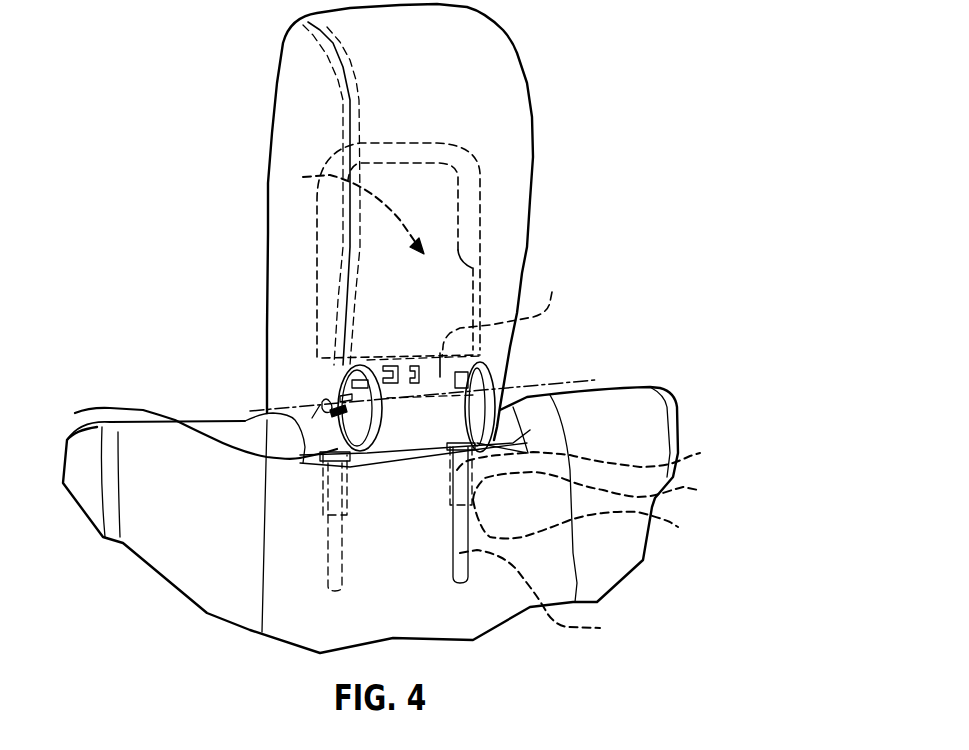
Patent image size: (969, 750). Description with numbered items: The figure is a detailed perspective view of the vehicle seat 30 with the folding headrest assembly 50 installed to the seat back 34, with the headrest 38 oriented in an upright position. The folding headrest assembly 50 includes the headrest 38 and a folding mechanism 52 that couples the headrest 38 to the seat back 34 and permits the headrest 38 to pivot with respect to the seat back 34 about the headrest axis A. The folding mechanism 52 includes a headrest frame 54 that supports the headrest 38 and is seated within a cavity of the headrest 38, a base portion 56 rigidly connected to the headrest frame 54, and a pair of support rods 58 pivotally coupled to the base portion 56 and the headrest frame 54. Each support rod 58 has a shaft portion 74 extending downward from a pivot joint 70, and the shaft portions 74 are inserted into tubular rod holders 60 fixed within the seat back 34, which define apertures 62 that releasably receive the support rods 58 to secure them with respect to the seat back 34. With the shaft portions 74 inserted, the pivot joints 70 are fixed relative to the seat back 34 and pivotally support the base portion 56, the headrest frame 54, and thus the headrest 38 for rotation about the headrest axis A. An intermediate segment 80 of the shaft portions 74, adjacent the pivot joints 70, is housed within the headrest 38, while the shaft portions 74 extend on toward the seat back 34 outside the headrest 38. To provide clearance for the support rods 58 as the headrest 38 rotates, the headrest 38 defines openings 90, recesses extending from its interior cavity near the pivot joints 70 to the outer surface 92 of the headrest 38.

The vehicle seat 30 is at (281, 44).
The headrest 38 is at (485, 42).
The outer surface 92 is at (293, 118).
The folding mechanism 52 is at (470, 159).
The headrest frame 54 is at (468, 208).
The base portion 56 is at (503, 318).
The folding headrest assembly 50 is at (381, 280).
The openings 90 is at (362, 379).
The pivot joints 70 is at (319, 412).
The intermediate segment 80 is at (191, 426).
The seat back 34 is at (593, 573).
The shaft portions 74 is at (593, 453).
The rod holders 60 is at (600, 489).
The apertures 62 is at (590, 521).
The support rods 58 is at (474, 543).
The headrest axis A is at (593, 380).